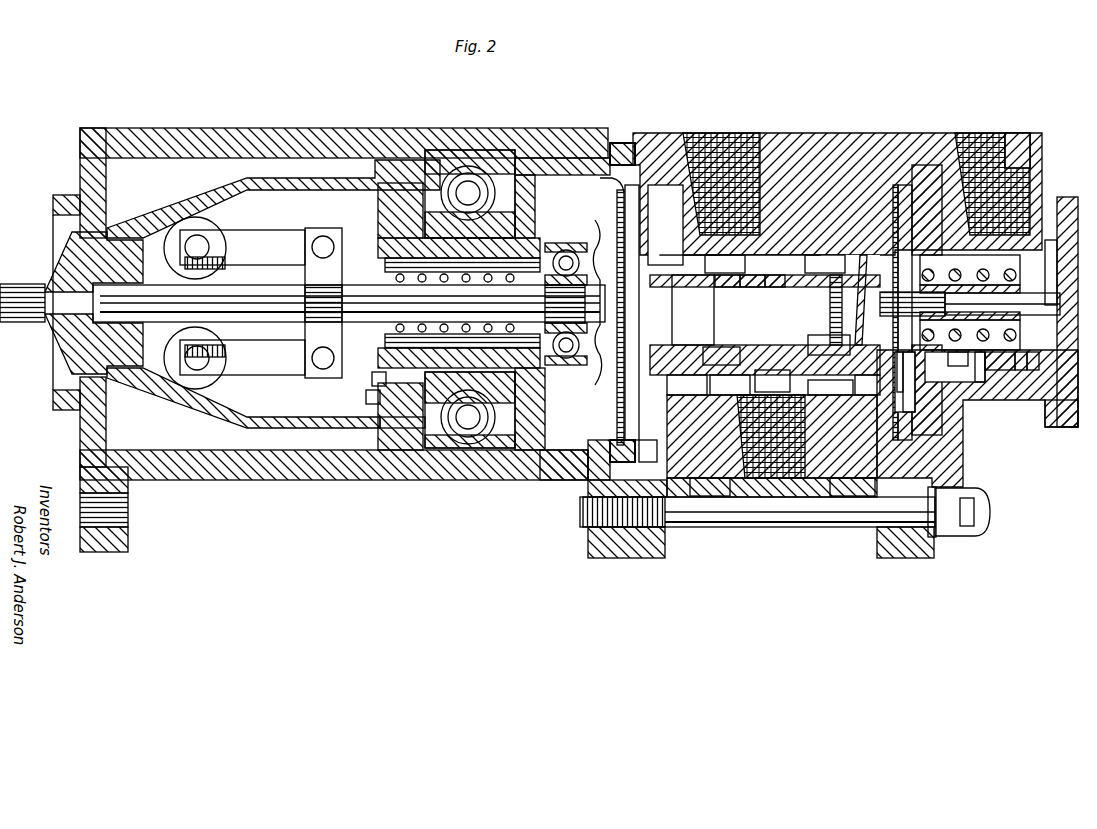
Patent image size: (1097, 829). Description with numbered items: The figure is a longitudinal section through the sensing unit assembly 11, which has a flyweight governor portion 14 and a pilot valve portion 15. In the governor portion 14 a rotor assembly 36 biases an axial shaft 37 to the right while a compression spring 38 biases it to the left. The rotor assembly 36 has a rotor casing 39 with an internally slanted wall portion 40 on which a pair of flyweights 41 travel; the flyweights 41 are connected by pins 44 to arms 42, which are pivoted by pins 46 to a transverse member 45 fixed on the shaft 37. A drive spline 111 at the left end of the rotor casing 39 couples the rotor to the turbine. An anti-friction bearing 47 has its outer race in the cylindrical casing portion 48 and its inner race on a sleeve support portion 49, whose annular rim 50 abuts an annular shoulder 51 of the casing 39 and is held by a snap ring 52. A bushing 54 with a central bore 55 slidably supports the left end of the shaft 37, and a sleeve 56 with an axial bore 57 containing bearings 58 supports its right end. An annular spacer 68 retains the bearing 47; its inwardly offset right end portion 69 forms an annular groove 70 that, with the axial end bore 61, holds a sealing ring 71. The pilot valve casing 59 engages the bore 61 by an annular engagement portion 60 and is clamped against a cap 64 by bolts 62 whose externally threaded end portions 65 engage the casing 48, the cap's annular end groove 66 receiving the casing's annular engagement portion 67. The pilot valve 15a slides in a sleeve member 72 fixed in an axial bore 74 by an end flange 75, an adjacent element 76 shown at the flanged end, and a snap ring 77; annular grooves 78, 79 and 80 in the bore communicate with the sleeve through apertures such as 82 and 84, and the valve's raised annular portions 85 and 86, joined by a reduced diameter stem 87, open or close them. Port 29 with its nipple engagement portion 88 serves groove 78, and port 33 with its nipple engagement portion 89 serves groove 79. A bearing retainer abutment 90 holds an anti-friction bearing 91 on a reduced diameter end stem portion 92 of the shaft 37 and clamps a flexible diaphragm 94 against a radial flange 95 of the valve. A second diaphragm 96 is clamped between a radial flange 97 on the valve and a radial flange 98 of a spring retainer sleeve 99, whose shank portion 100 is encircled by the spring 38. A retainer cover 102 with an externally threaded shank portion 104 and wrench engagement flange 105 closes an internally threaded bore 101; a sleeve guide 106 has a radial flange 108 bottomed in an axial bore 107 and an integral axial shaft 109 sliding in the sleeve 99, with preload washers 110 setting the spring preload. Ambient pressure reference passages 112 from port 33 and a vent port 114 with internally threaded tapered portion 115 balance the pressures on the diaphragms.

The sensing unit assembly 11 is at (632, 558).
The flyweight governor portion 14 is at (260, 460).
The pilot valve portion 15 is at (680, 520).
The pilot valve 15a is at (772, 381).
The port 29 is at (745, 140).
The port 33 is at (762, 478).
The rotor assembly 36 is at (290, 460).
The axial shaft 37 is at (348, 330).
The compression spring 38 is at (908, 372).
The rotor casing 39 is at (262, 186).
The internally slanted wall portion 40 is at (218, 420).
The flyweights 41 is at (190, 215).
The arms 42 is at (256, 240).
The pins 44 is at (200, 246).
The transverse member 45 is at (330, 280).
The pins 46 is at (323, 247).
The anti-friction bearing 47 is at (445, 458).
The cylindrical casing portion 48 is at (482, 458).
The sleeve support portion 49 is at (516, 376).
The annular rim 50 is at (376, 398).
The annular shoulder 51 is at (380, 425).
The snap ring 52 is at (378, 384).
The bushing 54 is at (115, 348).
The central bore 55 is at (132, 330).
The sleeve 56 is at (515, 244).
The axial bore 57 is at (540, 252).
The bearings 58 is at (458, 272).
The pilot valve casing 59 is at (745, 478).
The annular engagement portion 60 is at (648, 440).
The axial end bore 61 is at (635, 143).
The bolts 62 is at (962, 510).
The cap 64 is at (963, 470).
The externally threaded end portions 65 is at (668, 508).
The annular end groove 66 is at (893, 490).
The annular engagement portion 67 is at (930, 400).
The annular spacer 68 is at (556, 450).
The inwardly offset right end portion 69 is at (622, 440).
The annular groove 70 is at (596, 450).
The sealing ring 71 is at (590, 486).
The sleeve member 72 is at (748, 262).
The axial bore 74 is at (780, 284).
The end flange 75 is at (868, 352).
The disc 76 is at (838, 282).
The snap ring 77 is at (862, 262).
The annular groove 78 is at (728, 282).
The annular groove 79 is at (760, 282).
The annular groove 80 is at (818, 274).
The aperture 82 is at (752, 340).
The aperture 84 is at (840, 352).
The raised annular portion 85 is at (680, 370).
The raised annular portion 86 is at (826, 335).
The reduced diameter stem 87 is at (725, 335).
The nipple engagement portion 88 is at (700, 133).
The nipple engagement portion 89 is at (805, 478).
The bearing retainer abutment 90 is at (618, 232).
The anti-friction bearing 91 is at (570, 255).
The reduced diameter end stem portion 92 is at (548, 302).
The flexible diaphragm 94 is at (610, 180).
The radial flange 95 is at (634, 274).
The second diaphragm 96 is at (900, 205).
The radial flange 97 is at (902, 262).
The radial flange 98 is at (910, 378).
The spring retainer sleeve 99 is at (945, 280).
The shank portion 100 is at (958, 360).
The internally threaded bore 101 is at (1034, 370).
The retainer cover 102 is at (1062, 414).
The externally threaded shank portion 104 is at (1000, 370).
The wrench engagement flange 105 is at (1072, 197).
The sleeve guide 106 is at (940, 305).
The axial bore 107 is at (1052, 240).
The radial flange 108 is at (1050, 300).
The integral axial shaft 109 is at (982, 340).
The preload washers 110 is at (1022, 370).
The drive spline 111 is at (0, 327).
The ambient pressure reference passages 112 is at (782, 489).
The vent port 114 is at (998, 140).
The internally threaded tapered portion 115 is at (1018, 142).